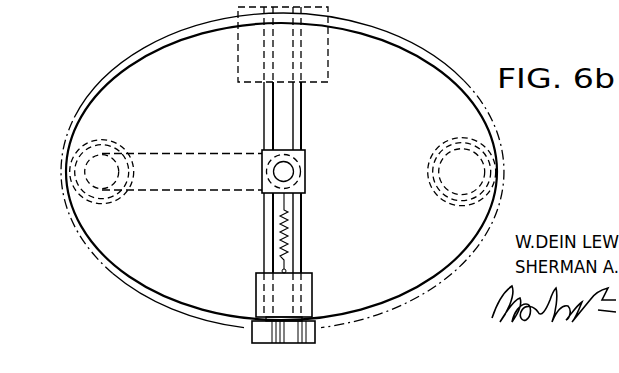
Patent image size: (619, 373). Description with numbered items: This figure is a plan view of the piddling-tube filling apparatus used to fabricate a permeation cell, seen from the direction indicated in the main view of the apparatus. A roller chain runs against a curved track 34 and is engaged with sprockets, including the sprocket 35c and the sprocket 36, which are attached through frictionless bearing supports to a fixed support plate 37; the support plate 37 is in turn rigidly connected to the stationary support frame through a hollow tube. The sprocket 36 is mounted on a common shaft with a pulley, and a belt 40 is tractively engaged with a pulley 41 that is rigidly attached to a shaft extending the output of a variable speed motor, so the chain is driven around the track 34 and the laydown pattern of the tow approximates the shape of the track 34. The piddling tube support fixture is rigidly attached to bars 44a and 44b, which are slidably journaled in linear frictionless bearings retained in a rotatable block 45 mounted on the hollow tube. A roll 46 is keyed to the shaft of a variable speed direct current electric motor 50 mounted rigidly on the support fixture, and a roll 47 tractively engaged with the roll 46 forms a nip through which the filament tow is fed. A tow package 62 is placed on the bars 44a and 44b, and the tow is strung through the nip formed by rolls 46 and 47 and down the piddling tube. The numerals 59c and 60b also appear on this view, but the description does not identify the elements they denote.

The curved track 34 is at (88, 243).
The sprocket 35c is at (500, 181).
The sprocket 36 is at (85, 203).
The fixed support plate 37 is at (193, 96).
The belt 40 is at (175, 190).
The pulley 41 is at (306, 186).
The bar 44a is at (302, 117).
The bar 44b is at (262, 113).
The rotatable block 45 is at (306, 162).
The roll 46 is at (251, 335).
The roll 47 is at (316, 340).
The variable speed direct current electric motor 50 is at (256, 292).
The upper member 59c is at (408, 6).
The upper member 60b is at (346, 5).
The tow package 62 is at (330, 70).